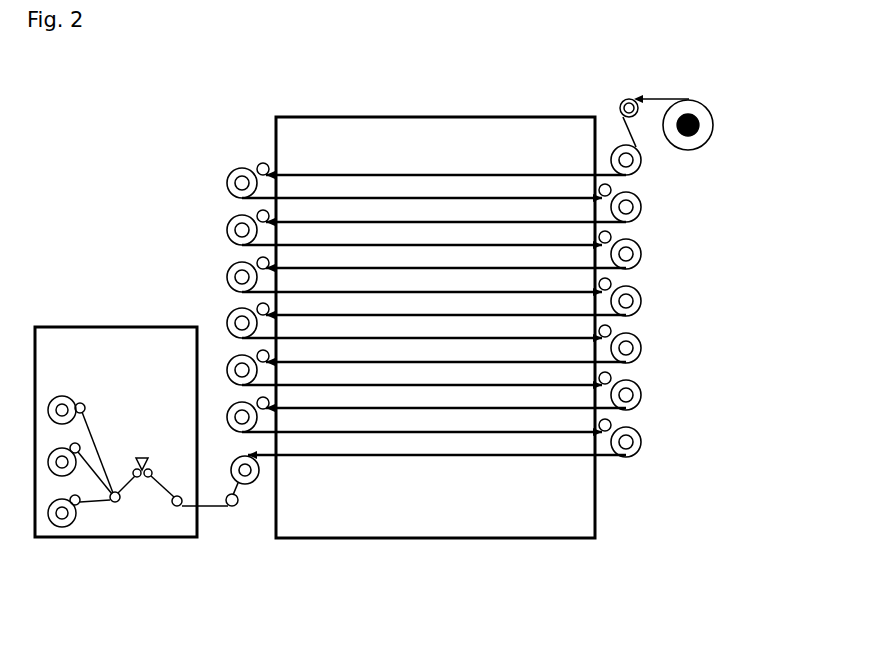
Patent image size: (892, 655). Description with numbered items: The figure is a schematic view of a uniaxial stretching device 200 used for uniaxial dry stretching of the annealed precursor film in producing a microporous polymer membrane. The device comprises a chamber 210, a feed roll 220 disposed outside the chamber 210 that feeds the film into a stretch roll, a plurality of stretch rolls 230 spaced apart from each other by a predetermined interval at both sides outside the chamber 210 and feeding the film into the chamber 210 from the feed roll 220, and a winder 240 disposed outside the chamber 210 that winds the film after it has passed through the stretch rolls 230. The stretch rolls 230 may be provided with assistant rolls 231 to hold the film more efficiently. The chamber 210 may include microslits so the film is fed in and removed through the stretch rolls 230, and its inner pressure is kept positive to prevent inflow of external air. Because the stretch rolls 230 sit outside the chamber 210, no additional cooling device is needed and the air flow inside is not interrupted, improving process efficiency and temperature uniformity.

The uniaxial stretching device 200 is at (107, 78).
The chamber 210 is at (435, 327).
The feed roll 220 is at (731, 142).
The stretch rolls 230 is at (650, 452).
The assistant rolls 231 is at (260, 154).
The winder 240 is at (116, 432).